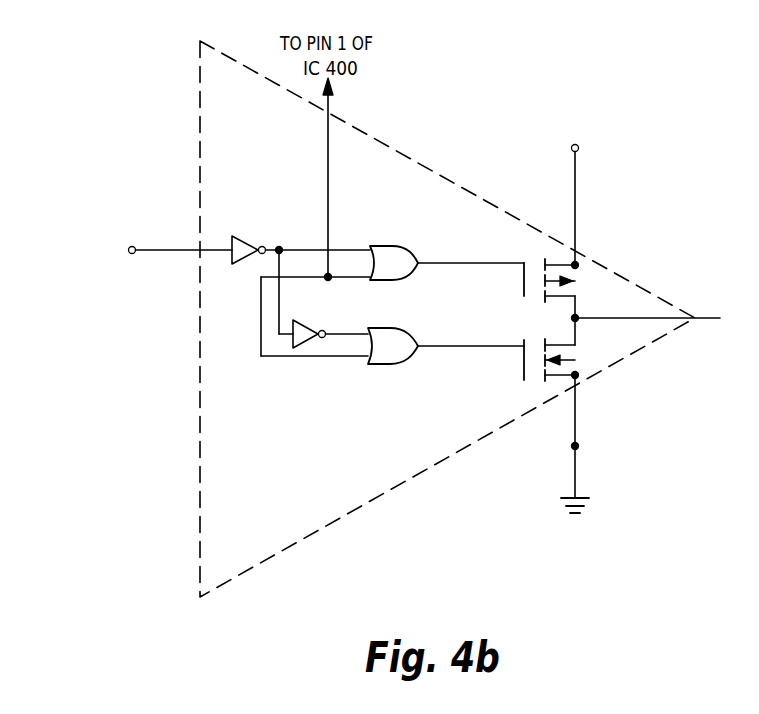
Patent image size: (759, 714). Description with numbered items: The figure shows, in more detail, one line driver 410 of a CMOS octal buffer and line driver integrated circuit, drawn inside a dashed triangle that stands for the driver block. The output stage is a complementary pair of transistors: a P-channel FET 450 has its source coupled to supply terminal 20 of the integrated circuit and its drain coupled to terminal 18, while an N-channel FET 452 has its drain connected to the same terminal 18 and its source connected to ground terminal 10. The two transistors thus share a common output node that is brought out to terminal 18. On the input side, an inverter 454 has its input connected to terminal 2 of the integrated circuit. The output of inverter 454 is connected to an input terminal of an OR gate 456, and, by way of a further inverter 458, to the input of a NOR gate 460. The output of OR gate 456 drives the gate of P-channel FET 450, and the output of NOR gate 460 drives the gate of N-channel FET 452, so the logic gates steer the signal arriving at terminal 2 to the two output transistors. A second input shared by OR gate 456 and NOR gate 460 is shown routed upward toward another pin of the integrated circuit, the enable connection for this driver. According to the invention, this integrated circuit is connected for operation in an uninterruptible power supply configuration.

The terminal 2 is at (160, 249).
The terminal 18 is at (667, 318).
The terminal 20 is at (579, 150).
The ground terminal 10 is at (579, 447).
The line driver 410 is at (696, 425).
The P-channel FET 450 is at (522, 283).
The N-channel FET 452 is at (522, 361).
The inverter 454 is at (249, 245).
The OR gate 456 is at (386, 249).
The inverter 458 is at (310, 331).
The NOR gate 460 is at (389, 363).